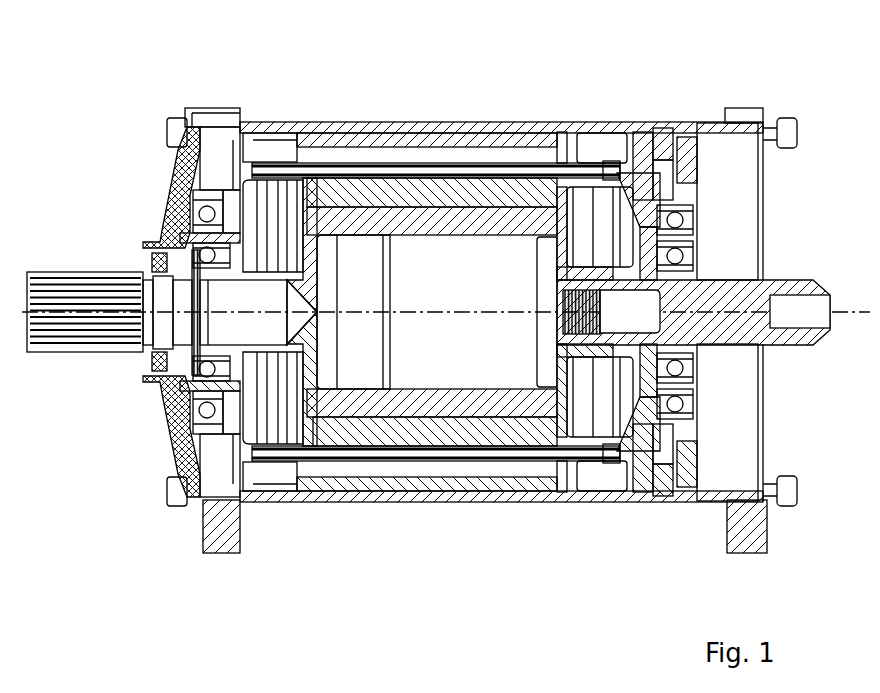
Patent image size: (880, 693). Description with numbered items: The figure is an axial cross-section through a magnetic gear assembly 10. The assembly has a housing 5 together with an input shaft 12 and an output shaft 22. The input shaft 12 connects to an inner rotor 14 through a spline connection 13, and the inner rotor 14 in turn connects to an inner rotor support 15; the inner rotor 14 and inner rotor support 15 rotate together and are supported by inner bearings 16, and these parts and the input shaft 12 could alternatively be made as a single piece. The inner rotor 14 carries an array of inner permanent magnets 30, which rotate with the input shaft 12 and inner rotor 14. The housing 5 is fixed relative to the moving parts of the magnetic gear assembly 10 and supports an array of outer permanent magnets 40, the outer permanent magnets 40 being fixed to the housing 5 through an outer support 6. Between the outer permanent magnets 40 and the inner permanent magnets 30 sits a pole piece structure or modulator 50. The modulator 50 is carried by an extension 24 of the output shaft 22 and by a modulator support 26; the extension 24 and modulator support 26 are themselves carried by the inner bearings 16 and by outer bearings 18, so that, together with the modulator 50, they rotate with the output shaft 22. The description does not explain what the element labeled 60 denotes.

The housing 5 is at (292, 124).
The outer support 6 is at (382, 126).
The magnetic gear assembly 10 is at (98, 585).
The input shaft 12 is at (794, 346).
The spline connection 13 is at (548, 329).
The inner rotor 14 is at (438, 403).
The inner rotor support 15 is at (350, 384).
The inner bearings 16 is at (208, 276).
The outer bearings 18 is at (177, 200).
The output shaft 22 is at (48, 356).
The extension 24 is at (188, 166).
The modulator support 26 is at (648, 178).
The inner permanent magnets 30 is at (467, 192).
The outer permanent magnets 40 is at (352, 125).
The modulator 50 is at (580, 498).
The upper sleeve 60 is at (590, 124).